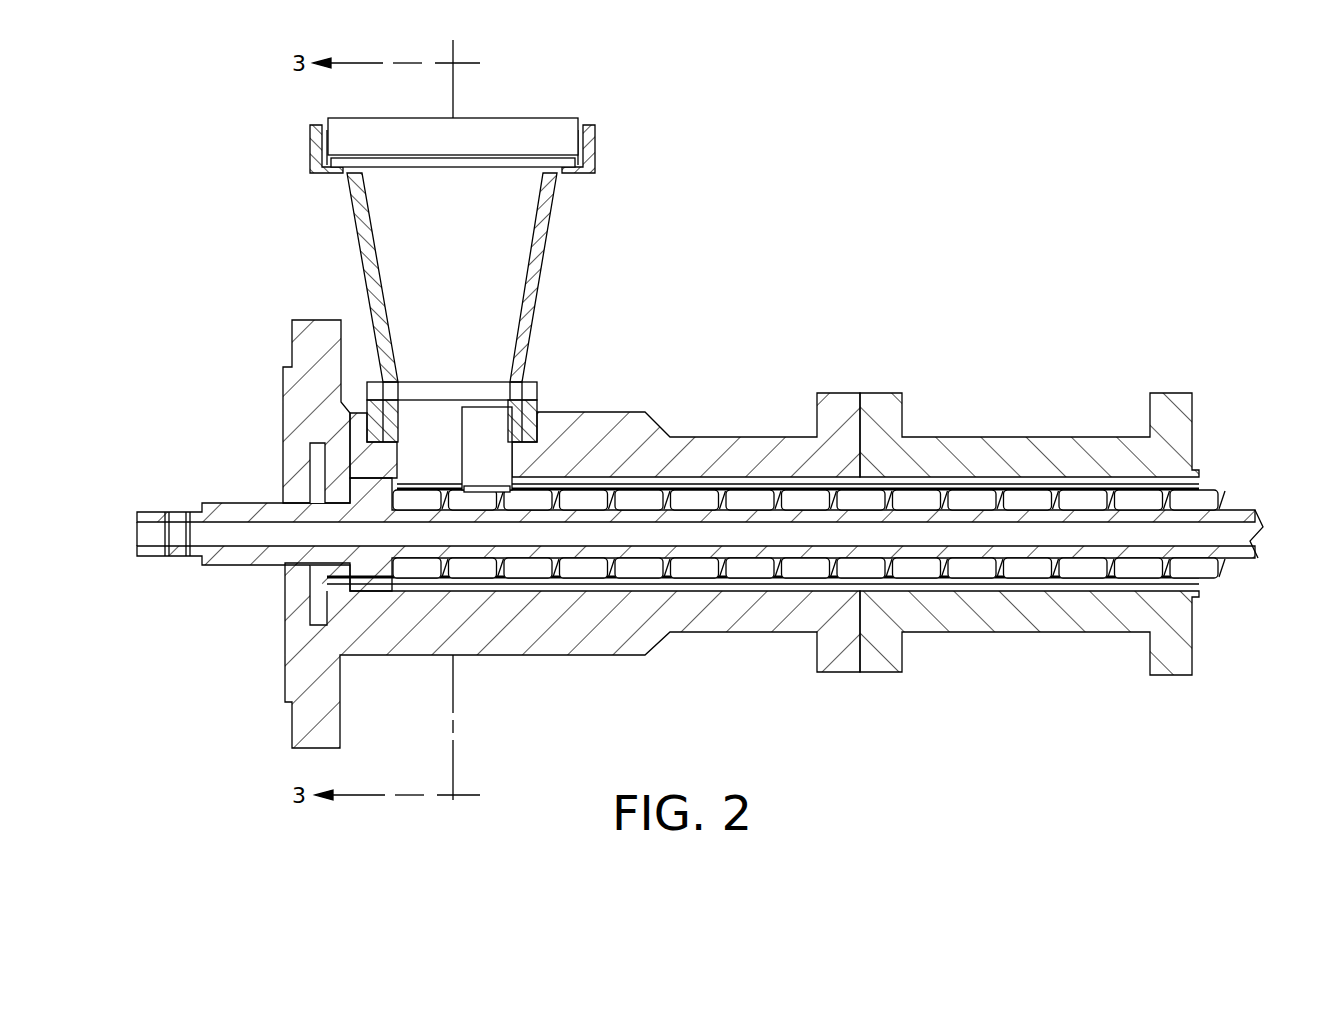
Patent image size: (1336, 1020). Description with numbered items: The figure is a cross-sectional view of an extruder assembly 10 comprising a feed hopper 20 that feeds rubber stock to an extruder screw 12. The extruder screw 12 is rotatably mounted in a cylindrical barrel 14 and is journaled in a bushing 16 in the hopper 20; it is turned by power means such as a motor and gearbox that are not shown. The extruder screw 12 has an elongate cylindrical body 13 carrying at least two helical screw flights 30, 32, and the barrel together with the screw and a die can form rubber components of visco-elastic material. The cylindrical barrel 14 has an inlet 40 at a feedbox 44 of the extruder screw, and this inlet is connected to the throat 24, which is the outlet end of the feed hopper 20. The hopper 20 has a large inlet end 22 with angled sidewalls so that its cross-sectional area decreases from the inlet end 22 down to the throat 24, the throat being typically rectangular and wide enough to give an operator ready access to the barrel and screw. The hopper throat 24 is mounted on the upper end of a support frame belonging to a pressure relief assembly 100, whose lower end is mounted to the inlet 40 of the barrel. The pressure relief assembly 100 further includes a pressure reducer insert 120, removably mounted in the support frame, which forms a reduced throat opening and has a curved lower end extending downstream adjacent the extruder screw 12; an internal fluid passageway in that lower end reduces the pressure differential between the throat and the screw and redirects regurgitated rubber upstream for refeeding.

The extruder assembly 10 is at (832, 192).
The extruder screw 12 is at (963, 490).
The elongate cylindrical body 13 is at (927, 540).
The cylindrical barrel 14 is at (1080, 487).
The bushing 16 is at (315, 616).
The feed hopper 20 is at (258, 190).
The inlet end 22 is at (580, 118).
The throat 24 is at (412, 385).
The helical screw flight 30 is at (510, 573).
The helical screw flight 32 is at (570, 568).
The inlet 40 is at (537, 412).
The feedbox 44 is at (367, 465).
The pressure relief assembly 100 is at (447, 420).
The pressure reducer insert 120 is at (478, 468).